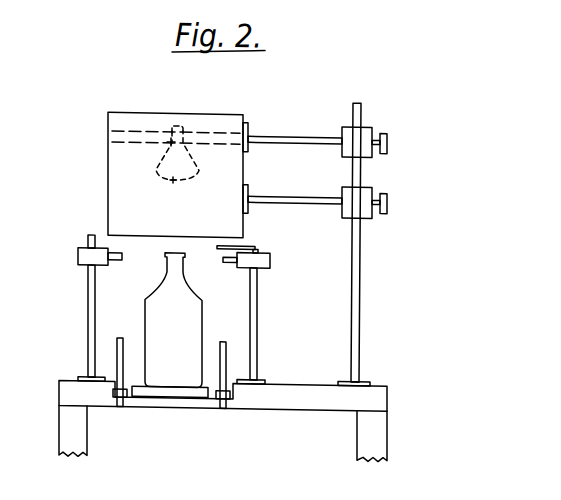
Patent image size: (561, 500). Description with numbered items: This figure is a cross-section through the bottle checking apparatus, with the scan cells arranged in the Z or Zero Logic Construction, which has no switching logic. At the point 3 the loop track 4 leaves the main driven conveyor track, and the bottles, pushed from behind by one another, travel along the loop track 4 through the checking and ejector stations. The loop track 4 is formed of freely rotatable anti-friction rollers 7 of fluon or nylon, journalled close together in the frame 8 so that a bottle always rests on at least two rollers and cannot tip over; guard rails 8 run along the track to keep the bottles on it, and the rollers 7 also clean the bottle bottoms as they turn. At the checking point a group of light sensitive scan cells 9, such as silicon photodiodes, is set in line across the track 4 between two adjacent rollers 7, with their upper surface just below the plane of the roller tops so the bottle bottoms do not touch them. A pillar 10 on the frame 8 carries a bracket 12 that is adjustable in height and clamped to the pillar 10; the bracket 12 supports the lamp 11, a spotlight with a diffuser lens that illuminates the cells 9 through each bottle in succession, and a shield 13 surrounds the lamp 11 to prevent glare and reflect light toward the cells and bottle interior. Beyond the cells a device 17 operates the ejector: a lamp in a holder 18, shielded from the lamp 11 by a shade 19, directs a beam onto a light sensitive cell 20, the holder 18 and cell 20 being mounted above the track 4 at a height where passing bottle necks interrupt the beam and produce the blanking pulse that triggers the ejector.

The loop track departure point 3 is at (117, 349).
The loop track 4 is at (214, 393).
The anti-friction rollers 7 is at (131, 395).
The frame 8 is at (378, 432).
The light sensitive scan cells 9 is at (184, 391).
The pillar 10 is at (357, 283).
The lamp 11 is at (169, 187).
The bracket 12 is at (287, 132).
The shield 13 is at (108, 172).
The ejector operating device 17 is at (255, 320).
The holder 18 is at (270, 258).
The shade 19 is at (245, 243).
The light sensitive cell 20 is at (78, 258).